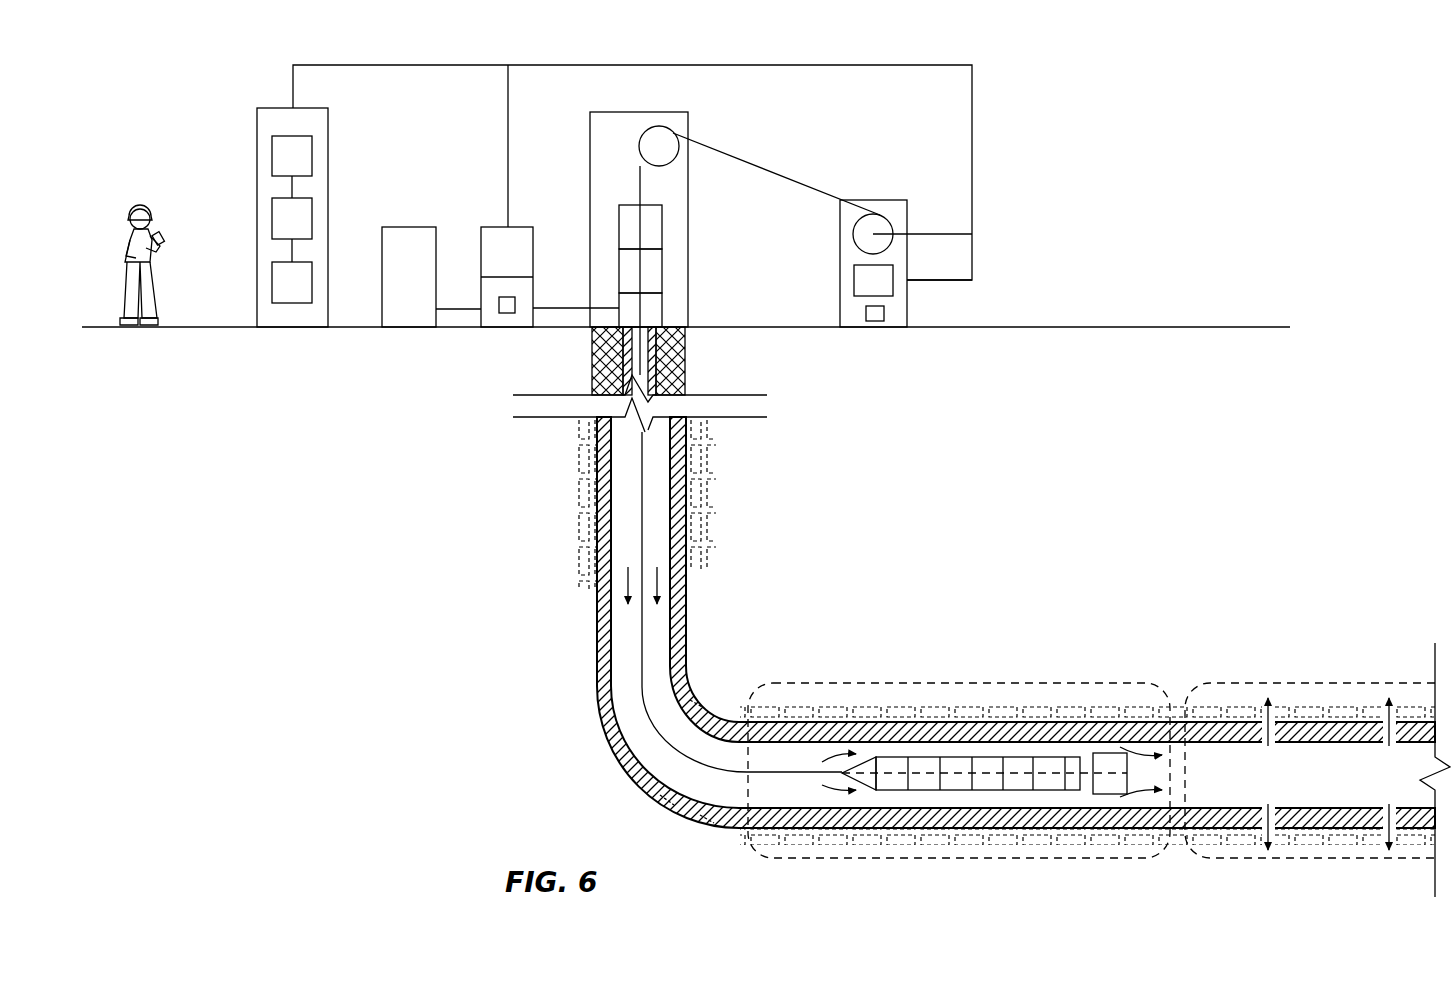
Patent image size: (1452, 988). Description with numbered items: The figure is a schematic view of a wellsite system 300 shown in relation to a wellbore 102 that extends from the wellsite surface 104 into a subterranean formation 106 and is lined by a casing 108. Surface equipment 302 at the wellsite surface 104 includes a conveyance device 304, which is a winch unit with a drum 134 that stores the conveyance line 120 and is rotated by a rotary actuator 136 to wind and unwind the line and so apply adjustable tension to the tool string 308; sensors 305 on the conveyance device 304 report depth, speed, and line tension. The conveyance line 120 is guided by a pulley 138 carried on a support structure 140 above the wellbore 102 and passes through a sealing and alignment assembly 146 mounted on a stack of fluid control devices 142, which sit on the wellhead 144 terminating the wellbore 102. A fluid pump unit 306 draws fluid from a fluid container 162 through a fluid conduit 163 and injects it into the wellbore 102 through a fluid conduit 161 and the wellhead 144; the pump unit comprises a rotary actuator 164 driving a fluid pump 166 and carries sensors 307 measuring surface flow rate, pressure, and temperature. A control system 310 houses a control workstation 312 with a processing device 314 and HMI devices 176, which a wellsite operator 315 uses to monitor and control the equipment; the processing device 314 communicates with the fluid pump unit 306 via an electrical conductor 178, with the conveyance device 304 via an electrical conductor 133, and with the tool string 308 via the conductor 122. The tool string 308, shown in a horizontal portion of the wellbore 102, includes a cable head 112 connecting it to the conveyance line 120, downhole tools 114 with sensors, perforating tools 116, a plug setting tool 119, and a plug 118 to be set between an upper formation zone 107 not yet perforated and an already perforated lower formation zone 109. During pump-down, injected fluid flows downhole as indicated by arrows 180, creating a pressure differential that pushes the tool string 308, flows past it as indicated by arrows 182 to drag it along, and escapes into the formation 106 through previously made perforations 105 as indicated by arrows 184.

The wellsite system 300 is at (155, 76).
The surface equipment 302 is at (997, 140).
The conveyance device 304 is at (876, 200).
The sensors 305 is at (866, 313).
The fluid pump unit 306 is at (498, 227).
The sensors 307 is at (509, 313).
The tool string 308 is at (919, 748).
The control system 310 is at (257, 130).
The control workstation 312 is at (272, 220).
The processing device 314 is at (272, 163).
The wellsite operator 315 is at (140, 207).
The wellsite surface 104 is at (1075, 327).
The wellbore 102 is at (625, 530).
The subterranean formation 106 is at (578, 457).
The casing 108 is at (597, 600).
The perforations 105 is at (1247, 718).
The upper formation zone 107 is at (1057, 683).
The lower formation zone 109 is at (1320, 683).
The cable head 112 is at (868, 758).
The downhole tools 114 is at (953, 792).
The perforating tools 116 is at (1050, 792).
The plug 118 is at (1110, 795).
The plug setting tool 119 is at (1077, 792).
The conveyance line 120 is at (639, 186).
The conductor 122 is at (930, 234).
The electrical conductor 133 is at (935, 280).
The drum 134 is at (853, 234).
The rotary actuator 136 is at (854, 283).
The pulley 138 is at (640, 143).
The support structure 140 is at (688, 126).
The fluid control devices 142 is at (662, 268).
The wellhead 144 is at (662, 310).
The sealing and alignment assembly 146 is at (662, 226).
The fluid conduit 161 is at (572, 308).
The fluid container 162 is at (402, 227).
The fluid conduit 163 is at (472, 309).
The rotary actuator 164 is at (523, 237).
The fluid pump 166 is at (490, 328).
The HMI devices 176 is at (272, 283).
The electrical conductor 178 is at (508, 148).
The arrows indicating downhole fluid flow 180 is at (658, 585).
The arrows indicating fluid passing tool string 182 is at (1140, 720).
The arrows indicating fluid escaping into formation 184 is at (1385, 720).